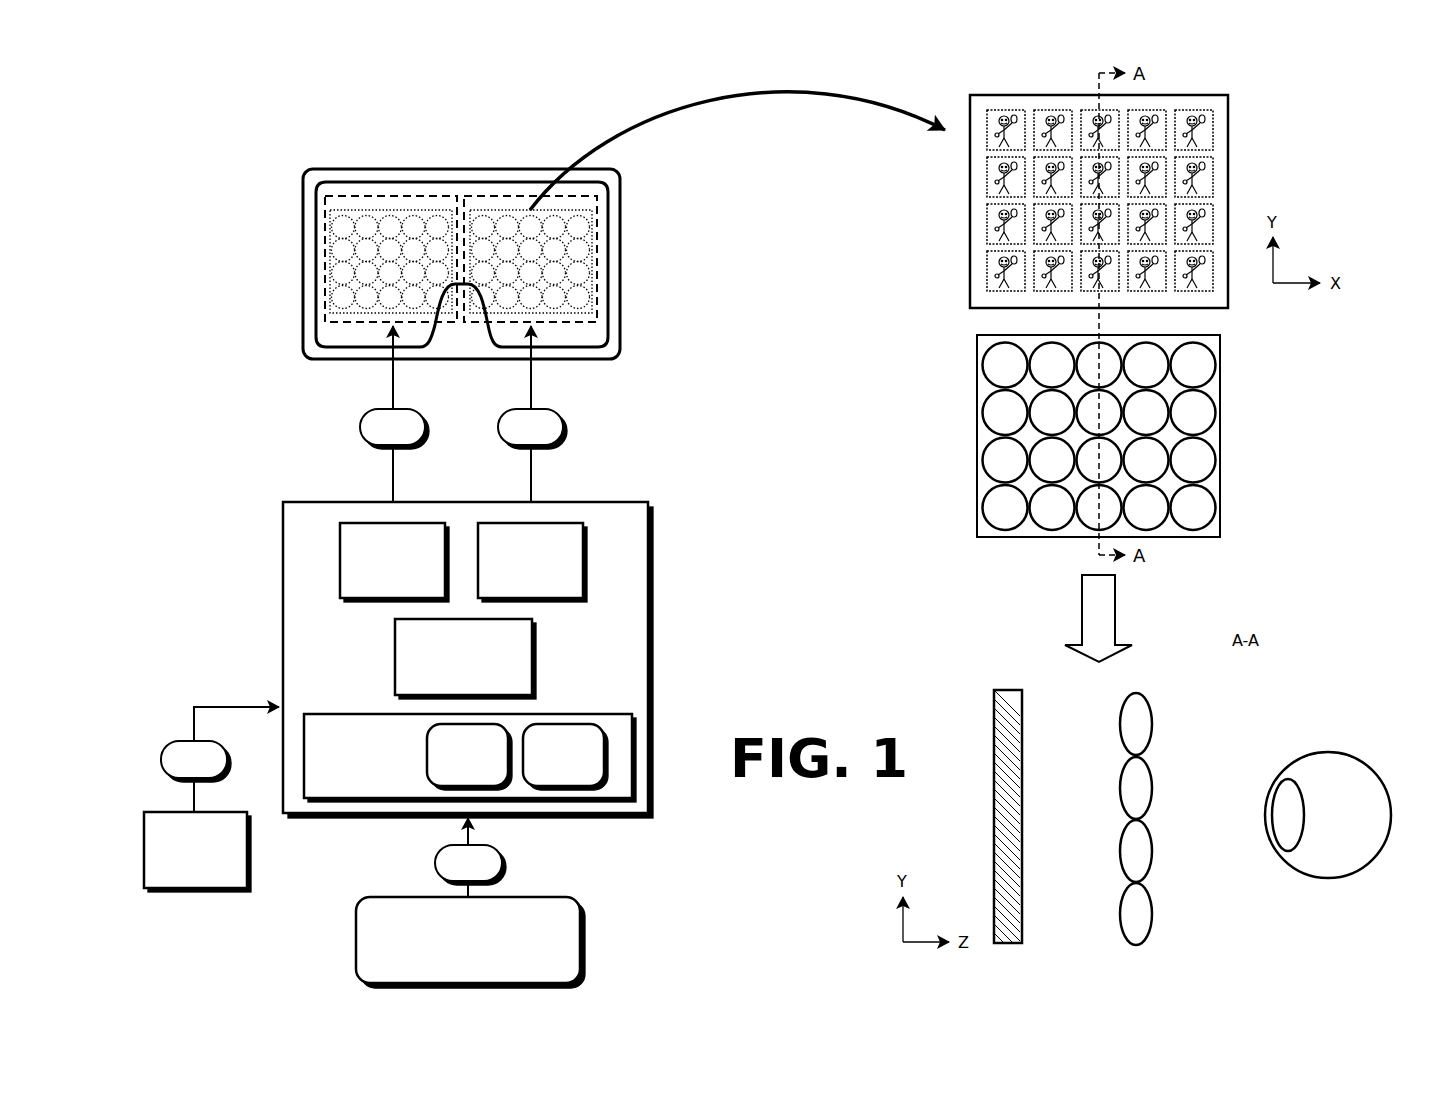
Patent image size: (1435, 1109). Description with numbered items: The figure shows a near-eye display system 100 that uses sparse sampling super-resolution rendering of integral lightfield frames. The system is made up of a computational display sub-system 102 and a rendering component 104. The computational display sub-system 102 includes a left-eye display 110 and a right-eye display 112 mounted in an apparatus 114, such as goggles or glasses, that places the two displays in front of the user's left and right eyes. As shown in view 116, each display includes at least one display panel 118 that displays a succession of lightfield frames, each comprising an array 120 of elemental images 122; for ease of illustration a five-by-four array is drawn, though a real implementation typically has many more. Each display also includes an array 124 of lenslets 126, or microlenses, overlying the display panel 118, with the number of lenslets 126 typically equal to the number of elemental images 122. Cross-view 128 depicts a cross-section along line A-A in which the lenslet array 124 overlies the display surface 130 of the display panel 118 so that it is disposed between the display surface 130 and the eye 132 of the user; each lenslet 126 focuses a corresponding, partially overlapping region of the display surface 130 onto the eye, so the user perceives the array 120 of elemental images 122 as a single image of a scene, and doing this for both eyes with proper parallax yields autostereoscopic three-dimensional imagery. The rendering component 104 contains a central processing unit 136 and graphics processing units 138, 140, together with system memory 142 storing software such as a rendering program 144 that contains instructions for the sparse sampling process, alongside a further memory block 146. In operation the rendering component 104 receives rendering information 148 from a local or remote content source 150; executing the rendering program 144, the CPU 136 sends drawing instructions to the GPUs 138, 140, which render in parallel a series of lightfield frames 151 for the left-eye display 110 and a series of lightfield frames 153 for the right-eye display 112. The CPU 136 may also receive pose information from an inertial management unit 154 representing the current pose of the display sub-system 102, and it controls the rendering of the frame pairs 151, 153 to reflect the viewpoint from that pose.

The near-eye display system 100 is at (238, 285).
The computational display sub-system 102 is at (461, 191).
The rendering component 104 is at (468, 660).
The left-eye display 110 is at (357, 196).
The right-eye display 112 is at (512, 196).
The apparatus 114 is at (620, 282).
The view 116 is at (1268, 125).
The display panel 118 is at (1096, 527).
The array of elemental images 120 is at (1141, 184).
The elemental image 122 is at (1215, 183).
The lenslet array 124 is at (1099, 640).
The lenslet 126 is at (1222, 415).
The cross-view 128 is at (1328, 805).
The display surface 130 is at (1026, 907).
The eye 132 is at (1313, 878).
The central processing unit 136 is at (465, 659).
The graphics processing unit 138 is at (394, 562).
The graphics processing unit 140 is at (532, 562).
The system memory 142 is at (470, 758).
The rendering program 144 is at (469, 757).
The memory module 146 is at (565, 757).
The rendering information 148 is at (470, 865).
The content source 150 is at (373, 864).
The lightfield frames 151 is at (394, 429).
The lightfield frames 153 is at (532, 429).
The inertial management unit 154 is at (197, 852).